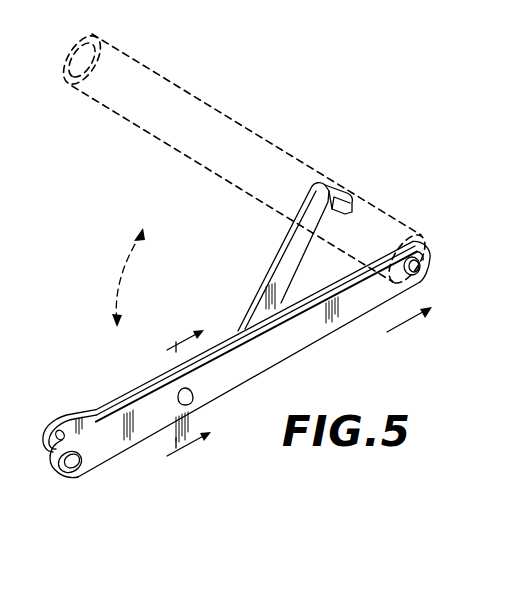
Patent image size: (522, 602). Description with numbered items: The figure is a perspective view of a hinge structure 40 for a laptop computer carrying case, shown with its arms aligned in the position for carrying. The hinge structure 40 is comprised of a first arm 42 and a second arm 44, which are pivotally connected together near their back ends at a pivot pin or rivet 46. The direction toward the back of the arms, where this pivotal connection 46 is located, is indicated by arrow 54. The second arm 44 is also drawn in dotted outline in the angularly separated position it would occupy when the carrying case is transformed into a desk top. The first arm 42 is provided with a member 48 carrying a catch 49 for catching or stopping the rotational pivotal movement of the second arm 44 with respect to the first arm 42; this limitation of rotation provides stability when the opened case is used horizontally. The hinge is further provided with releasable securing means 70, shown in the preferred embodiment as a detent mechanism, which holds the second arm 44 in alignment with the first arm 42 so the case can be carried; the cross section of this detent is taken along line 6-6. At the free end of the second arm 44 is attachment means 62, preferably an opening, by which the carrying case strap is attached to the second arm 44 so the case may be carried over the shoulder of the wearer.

The hinge structure 40 is at (300, 353).
The first arm 42 is at (72, 410).
The second arm 44 is at (222, 158).
The pivot pin or rivet 46 is at (422, 266).
The member 48 is at (267, 278).
The catch 49 is at (346, 191).
The arrow 54 is at (413, 325).
The attachment means (opening) 62 is at (62, 479).
The releasable securing means (detent mechanism) 70 is at (193, 397).
The section line 6- 6 is at (180, 401).